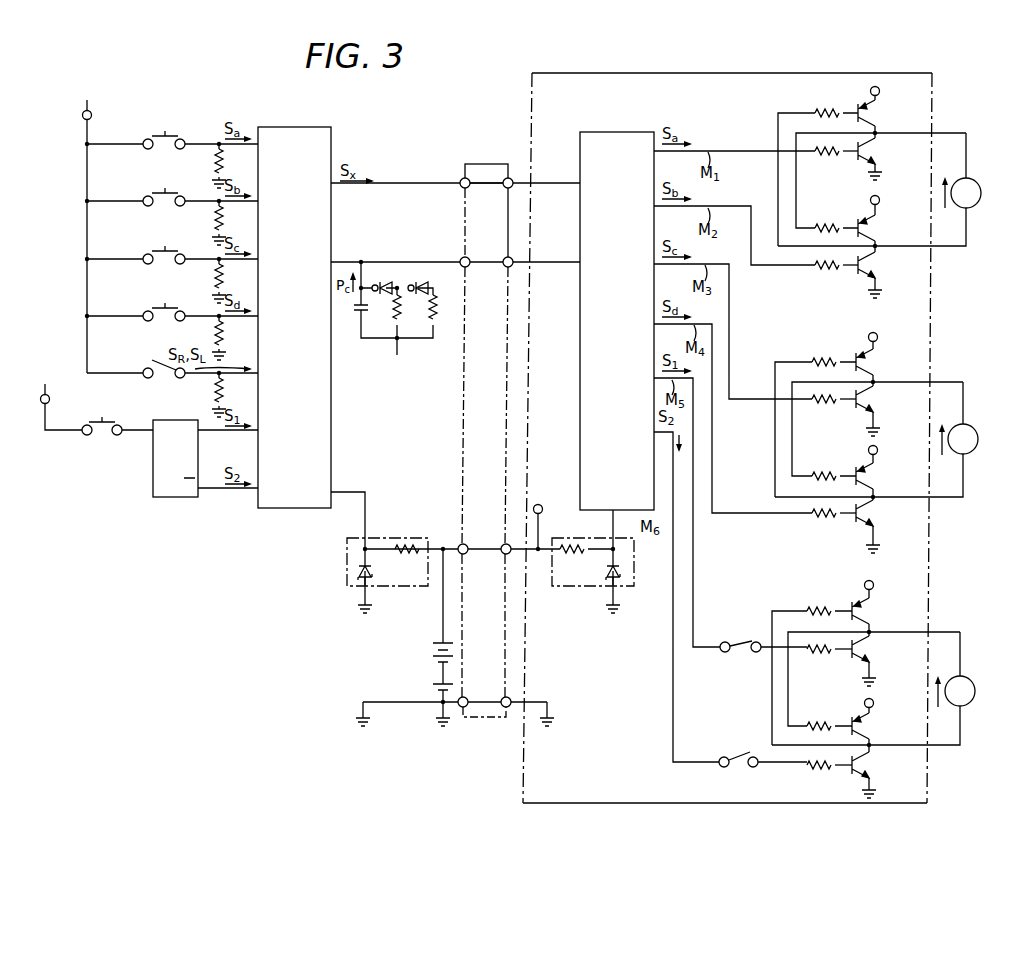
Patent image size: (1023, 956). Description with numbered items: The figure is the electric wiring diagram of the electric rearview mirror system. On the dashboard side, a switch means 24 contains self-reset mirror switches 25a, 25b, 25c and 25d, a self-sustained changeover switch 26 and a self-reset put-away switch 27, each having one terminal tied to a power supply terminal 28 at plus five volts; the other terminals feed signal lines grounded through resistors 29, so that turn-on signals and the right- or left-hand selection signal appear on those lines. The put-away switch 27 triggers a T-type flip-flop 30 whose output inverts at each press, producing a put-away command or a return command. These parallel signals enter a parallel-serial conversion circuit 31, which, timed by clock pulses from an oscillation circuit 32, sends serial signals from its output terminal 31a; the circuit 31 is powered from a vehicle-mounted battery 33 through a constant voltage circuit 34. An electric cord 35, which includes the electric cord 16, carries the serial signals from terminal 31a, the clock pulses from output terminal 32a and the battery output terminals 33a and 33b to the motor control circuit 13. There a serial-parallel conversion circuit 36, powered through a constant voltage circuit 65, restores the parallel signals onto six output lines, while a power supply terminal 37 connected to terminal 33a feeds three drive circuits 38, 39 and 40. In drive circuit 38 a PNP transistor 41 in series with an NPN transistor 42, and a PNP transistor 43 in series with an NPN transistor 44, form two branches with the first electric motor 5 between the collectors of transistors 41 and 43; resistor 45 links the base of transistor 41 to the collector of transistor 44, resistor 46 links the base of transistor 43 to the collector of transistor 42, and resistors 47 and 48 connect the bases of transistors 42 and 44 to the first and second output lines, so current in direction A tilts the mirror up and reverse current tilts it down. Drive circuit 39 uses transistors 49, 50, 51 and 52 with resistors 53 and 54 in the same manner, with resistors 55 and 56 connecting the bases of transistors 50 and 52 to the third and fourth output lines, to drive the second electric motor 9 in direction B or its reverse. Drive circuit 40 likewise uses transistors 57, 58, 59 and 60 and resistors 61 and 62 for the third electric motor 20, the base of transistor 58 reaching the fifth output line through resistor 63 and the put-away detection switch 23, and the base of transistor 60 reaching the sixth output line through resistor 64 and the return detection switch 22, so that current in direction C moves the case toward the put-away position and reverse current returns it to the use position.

The first electric motor 5 is at (981, 193).
The second electric motor 9 is at (978, 439).
The motor control circuit 13 is at (532, 82).
The electric cord 16 is at (483, 698).
The third electric motor 20 is at (975, 691).
The return detection switch 22 is at (742, 756).
The put-away detection switch 23 is at (744, 641).
The switch means 24 is at (171, 190).
The self-reset mirror switch 25a is at (146, 137).
The self-reset mirror switch 25b is at (146, 194).
The self-reset mirror switch 25c is at (146, 252).
The self-reset mirror switch 25d is at (146, 309).
The self-sustained changeover switch 26 is at (154, 368).
The self-reset put-away switch 27 is at (96, 420).
The power supply terminal 28 is at (66, 250).
The resistor 29 is at (212, 168).
The T-type flip-flop 30 is at (175, 497).
The parallel-serial conversion circuit 31 is at (297, 127).
The output terminal 31a is at (462, 190).
The oscillation circuit 32 is at (395, 321).
The output terminal 32a is at (462, 258).
The vehicle-mounted battery 33 is at (432, 651).
The output terminal 33a is at (460, 545).
The output terminal 33b is at (463, 708).
The constant voltage circuit 34 is at (347, 574).
The electric cord 35 is at (462, 172).
The serial-parallel conversion circuit 36 is at (619, 132).
The power supply terminal 37 is at (539, 493).
The drive circuit 38 is at (896, 190).
The drive circuit 39 is at (895, 442).
The drive circuit 40 is at (897, 689).
The PNP transistor 41 is at (878, 112).
The NPN transistor 42 is at (878, 150).
The PNP transistor 43 is at (878, 227).
The NPN transistor 44 is at (878, 264).
The resistor 45 is at (818, 164).
The resistor 46 is at (881, 182).
The resistor 47 is at (836, 161).
The resistor 48 is at (836, 275).
The transistor 49 is at (876, 361).
The transistor 50 is at (876, 398).
The transistor 51 is at (876, 475).
The transistor 52 is at (876, 512).
The resistor 53 is at (815, 414).
The resistor 54 is at (877, 431).
The resistor 55 is at (834, 410).
The resistor 56 is at (834, 524).
The transistor 57 is at (872, 610).
The transistor 58 is at (872, 648).
The transistor 59 is at (872, 725).
The transistor 60 is at (872, 764).
The resistor 61 is at (812, 662).
The resistor 62 is at (874, 681).
The resistor 63 is at (829, 660).
The resistor 64 is at (829, 776).
The constant voltage circuit 65 is at (564, 586).